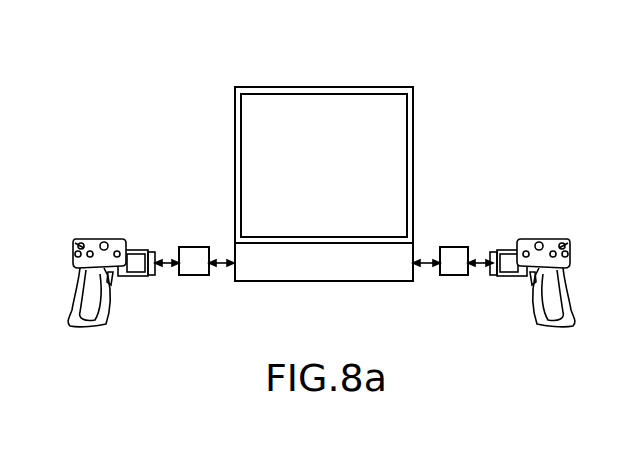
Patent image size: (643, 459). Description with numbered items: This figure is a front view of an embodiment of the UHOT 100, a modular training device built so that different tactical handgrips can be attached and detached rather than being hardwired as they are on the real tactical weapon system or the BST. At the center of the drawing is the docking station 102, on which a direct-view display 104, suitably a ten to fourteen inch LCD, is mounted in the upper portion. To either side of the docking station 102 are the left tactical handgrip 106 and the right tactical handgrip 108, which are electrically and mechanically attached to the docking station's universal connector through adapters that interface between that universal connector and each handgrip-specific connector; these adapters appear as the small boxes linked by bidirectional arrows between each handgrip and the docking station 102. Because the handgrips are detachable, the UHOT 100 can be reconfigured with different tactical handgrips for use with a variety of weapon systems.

The UHOT 100 is at (170, 126).
The docking station 102 is at (323, 281).
The direct-view display 104 is at (414, 163).
The left tactical handgrip 106 is at (110, 316).
The right tactical handgrip 108 is at (532, 312).